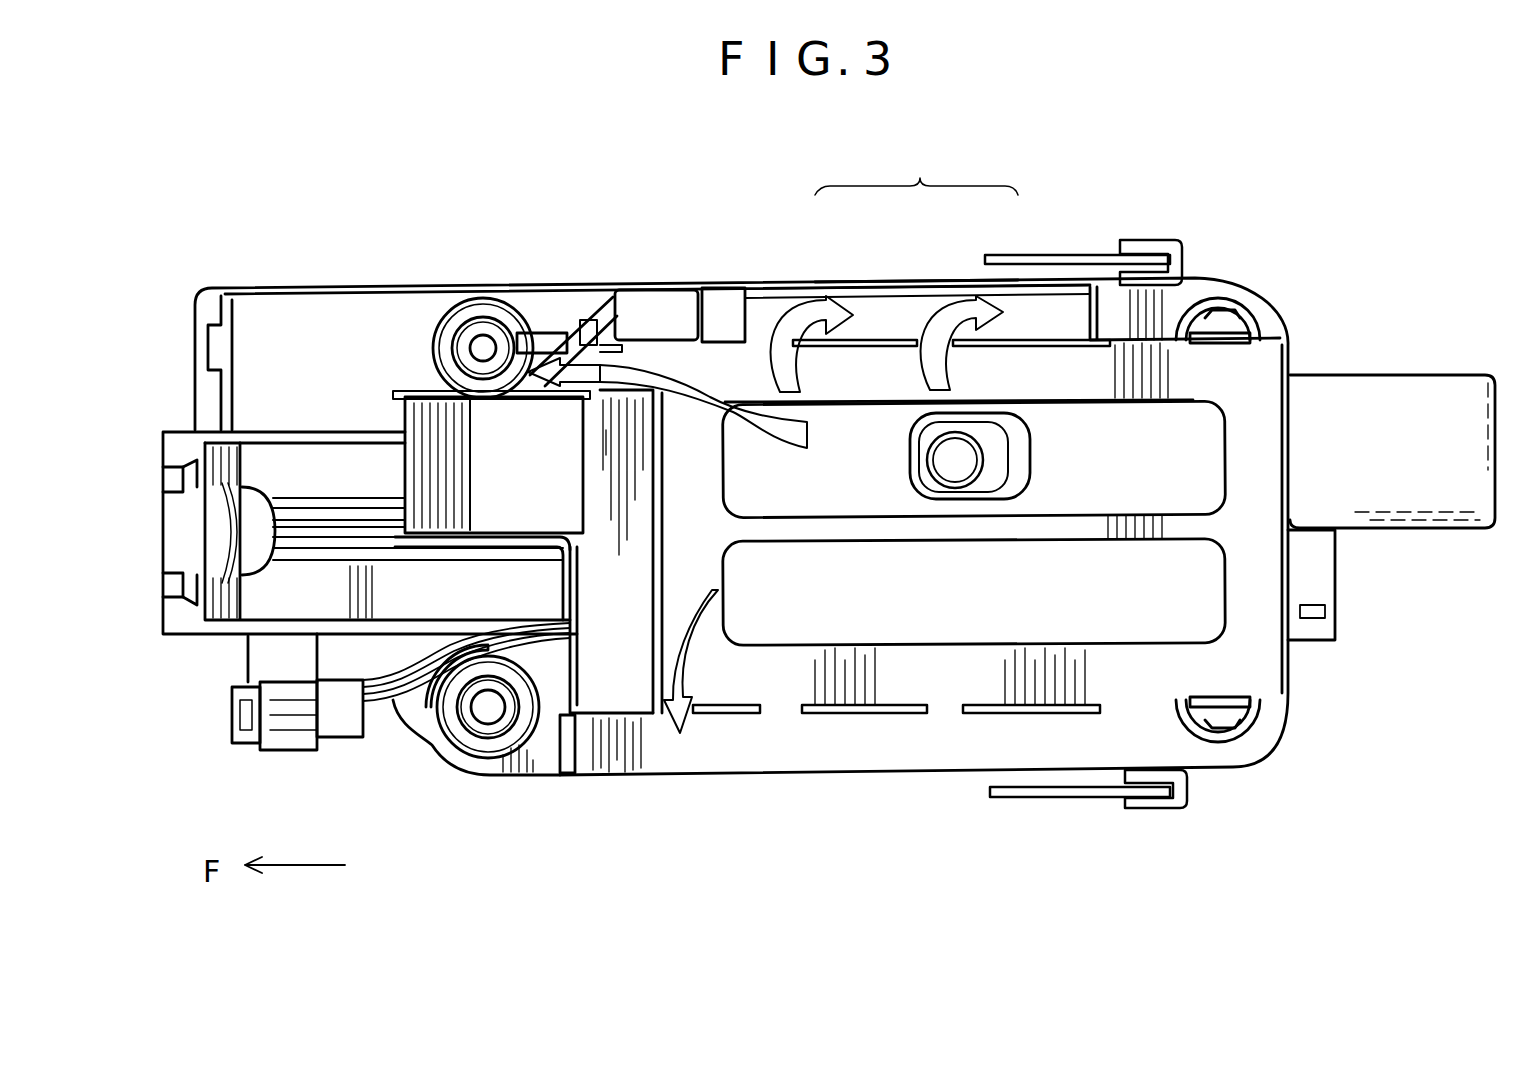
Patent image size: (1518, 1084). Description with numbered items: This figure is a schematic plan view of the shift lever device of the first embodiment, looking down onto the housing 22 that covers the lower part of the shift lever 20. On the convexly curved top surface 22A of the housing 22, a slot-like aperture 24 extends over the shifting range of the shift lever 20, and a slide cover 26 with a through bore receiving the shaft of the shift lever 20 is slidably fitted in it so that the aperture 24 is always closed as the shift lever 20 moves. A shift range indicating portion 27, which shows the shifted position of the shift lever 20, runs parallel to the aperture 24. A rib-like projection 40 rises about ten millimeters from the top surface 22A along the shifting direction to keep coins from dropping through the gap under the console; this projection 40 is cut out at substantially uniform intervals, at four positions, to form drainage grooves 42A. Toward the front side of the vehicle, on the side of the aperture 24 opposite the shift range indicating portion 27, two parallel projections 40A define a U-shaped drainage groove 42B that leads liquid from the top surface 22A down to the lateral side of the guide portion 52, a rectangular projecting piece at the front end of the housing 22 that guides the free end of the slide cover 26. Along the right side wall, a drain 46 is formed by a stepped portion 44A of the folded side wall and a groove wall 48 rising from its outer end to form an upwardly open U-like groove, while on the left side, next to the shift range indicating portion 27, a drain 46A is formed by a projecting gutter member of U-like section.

The shift lever 20 is at (960, 470).
The housing 22 is at (1250, 383).
The top surface 22A is at (1243, 600).
The aperture 24 is at (1233, 430).
The slide cover 26 is at (1180, 470).
The shift range indicating portion 27 is at (1128, 598).
The projection 40 is at (1003, 343).
The projections 40A is at (587, 342).
The drainage grooves 42A is at (787, 340).
The drainage groove 42B is at (640, 345).
The stepped portion 44A is at (873, 312).
The drain 46 is at (916, 214).
The drain 46A is at (1012, 740).
The groove wall 48 is at (910, 282).
The guide portion 52 is at (433, 428).